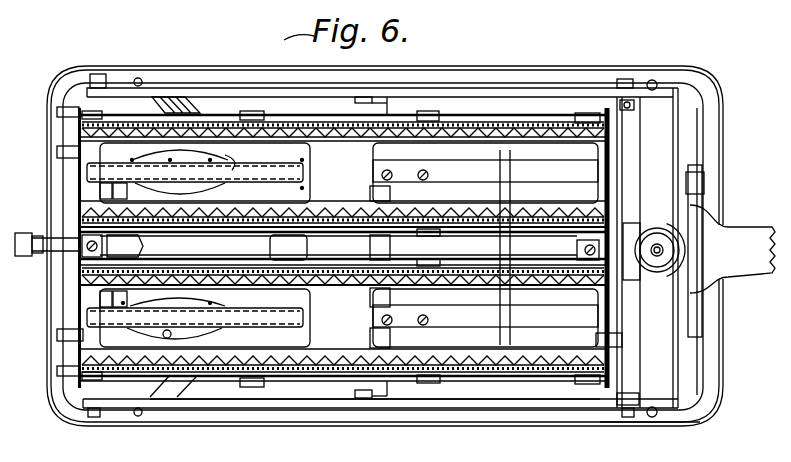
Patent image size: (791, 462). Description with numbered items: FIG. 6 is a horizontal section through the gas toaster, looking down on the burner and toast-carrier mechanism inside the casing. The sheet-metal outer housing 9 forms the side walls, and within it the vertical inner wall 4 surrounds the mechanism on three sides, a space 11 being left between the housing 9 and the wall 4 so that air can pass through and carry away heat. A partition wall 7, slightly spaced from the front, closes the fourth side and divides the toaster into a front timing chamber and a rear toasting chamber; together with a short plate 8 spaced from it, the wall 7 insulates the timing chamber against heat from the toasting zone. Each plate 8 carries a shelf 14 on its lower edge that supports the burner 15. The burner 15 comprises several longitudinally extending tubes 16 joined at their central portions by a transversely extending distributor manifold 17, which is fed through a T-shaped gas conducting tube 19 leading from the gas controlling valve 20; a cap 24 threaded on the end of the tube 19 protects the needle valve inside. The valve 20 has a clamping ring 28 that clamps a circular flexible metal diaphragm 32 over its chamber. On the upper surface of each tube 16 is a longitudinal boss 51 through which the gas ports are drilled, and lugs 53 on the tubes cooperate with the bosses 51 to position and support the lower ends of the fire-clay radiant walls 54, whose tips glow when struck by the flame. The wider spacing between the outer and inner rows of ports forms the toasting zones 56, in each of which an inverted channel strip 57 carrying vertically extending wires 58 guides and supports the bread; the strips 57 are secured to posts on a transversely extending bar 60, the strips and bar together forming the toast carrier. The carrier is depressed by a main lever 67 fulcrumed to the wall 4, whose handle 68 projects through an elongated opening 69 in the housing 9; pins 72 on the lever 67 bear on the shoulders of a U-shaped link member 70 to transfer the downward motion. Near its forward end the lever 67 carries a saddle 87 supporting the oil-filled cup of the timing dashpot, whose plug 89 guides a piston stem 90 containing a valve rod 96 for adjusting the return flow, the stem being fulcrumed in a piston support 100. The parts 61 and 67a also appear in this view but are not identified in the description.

The vertical inner wall 4 is at (452, 88).
The partition wall 7 is at (610, 358).
The short plate 8 is at (612, 304).
The outer housing 9 is at (612, 427).
The space 11 is at (536, 80).
The shelf 14 is at (88, 192).
The burner 15 is at (238, 113).
The longitudinally extending tubes 16 is at (255, 170).
The distributor manifold 17 is at (310, 248).
The gas conducting tube 19 is at (40, 237).
The gas controlling valve 20 is at (240, 160).
The cap 24 is at (25, 256).
The clamping ring 28 is at (208, 345).
The circular flexible metal diaphragm 32 is at (165, 185).
The boss 51 is at (355, 137).
The lugs 53 is at (100, 113).
The radiant walls 54 is at (316, 130).
The toasting zones 56 is at (354, 245).
The inverted channel strip 57 is at (350, 181).
The vertically extending wires 58 is at (160, 188).
The transversely extending bar 60 is at (392, 248).
The bracket 61 is at (340, 393).
The main lever 67 is at (457, 398).
The wedge 67a is at (189, 247).
The handle 68 is at (760, 230).
The elongated opening 69 is at (722, 226).
The link member 70 is at (512, 196).
The pins 72 is at (598, 107).
The saddle 87 is at (666, 313).
The plug 89 is at (657, 242).
The piston stem 90 is at (660, 258).
The valve rod 96 is at (657, 250).
The piston support 100 is at (624, 223).